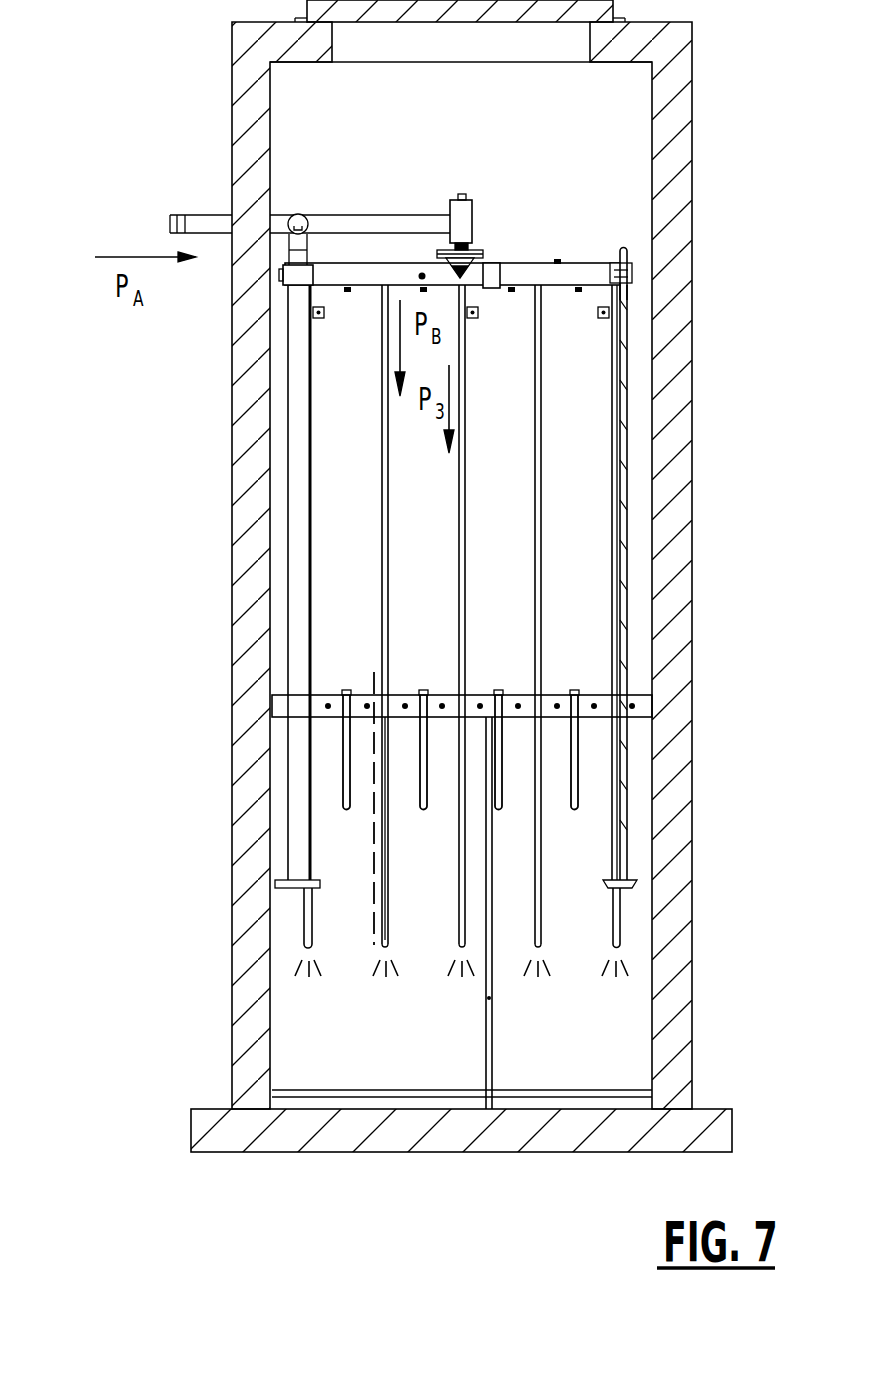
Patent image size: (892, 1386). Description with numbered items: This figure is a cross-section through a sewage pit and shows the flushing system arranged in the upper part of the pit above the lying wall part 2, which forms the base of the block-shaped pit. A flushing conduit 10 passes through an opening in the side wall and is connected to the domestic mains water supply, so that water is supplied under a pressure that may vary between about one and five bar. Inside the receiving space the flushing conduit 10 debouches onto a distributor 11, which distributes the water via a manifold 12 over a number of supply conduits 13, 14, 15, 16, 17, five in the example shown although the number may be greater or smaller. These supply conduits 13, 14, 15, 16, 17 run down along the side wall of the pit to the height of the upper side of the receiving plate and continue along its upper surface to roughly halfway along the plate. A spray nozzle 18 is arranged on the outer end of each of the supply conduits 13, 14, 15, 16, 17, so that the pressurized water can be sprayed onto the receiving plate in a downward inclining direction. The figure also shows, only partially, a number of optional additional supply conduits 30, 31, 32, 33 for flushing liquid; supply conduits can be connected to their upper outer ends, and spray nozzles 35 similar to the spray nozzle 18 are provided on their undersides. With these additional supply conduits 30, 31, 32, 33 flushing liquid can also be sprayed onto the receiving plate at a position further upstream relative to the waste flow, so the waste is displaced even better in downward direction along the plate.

The lying wall part 2 is at (348, 1143).
The flushing conduit 10 is at (198, 222).
The distributor 11 is at (463, 218).
The manifold 12 is at (368, 268).
The supply conduit 13 is at (310, 604).
The supply conduit 14 is at (385, 588).
The supply conduit 15 is at (460, 580).
The supply conduit 16 is at (537, 575).
The supply conduit 17 is at (612, 542).
The spray nozzle 18 is at (389, 950).
The additional supply conduit 30 is at (348, 768).
The additional supply conduit 31 is at (424, 742).
The additional supply conduit 32 is at (499, 760).
The additional supply conduit 33 is at (575, 773).
The spray nozzle 35 is at (425, 810).